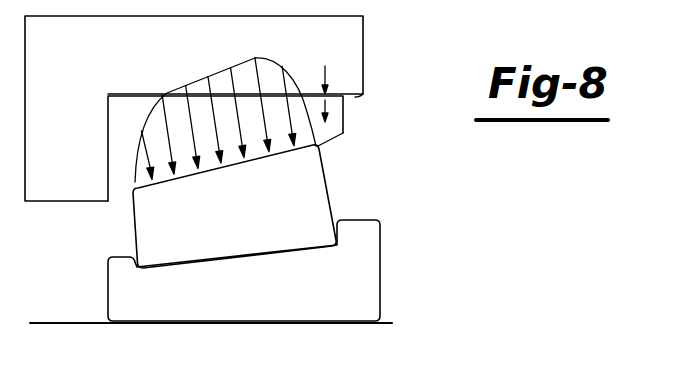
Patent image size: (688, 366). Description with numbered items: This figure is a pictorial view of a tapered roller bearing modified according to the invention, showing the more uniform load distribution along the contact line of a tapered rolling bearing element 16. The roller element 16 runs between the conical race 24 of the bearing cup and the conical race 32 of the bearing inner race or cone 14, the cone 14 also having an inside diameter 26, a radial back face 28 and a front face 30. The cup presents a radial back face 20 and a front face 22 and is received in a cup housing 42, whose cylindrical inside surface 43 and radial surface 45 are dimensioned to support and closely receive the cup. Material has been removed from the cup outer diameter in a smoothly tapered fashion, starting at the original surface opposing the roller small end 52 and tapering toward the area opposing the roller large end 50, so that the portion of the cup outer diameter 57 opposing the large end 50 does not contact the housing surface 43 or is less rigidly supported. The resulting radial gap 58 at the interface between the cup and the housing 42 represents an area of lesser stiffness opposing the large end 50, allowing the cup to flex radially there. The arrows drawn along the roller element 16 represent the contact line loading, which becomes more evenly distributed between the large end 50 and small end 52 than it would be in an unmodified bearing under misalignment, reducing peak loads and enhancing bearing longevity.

The bearing inner race or cone 14 is at (390, 252).
The tapered rolling bearing element 16 is at (124, 222).
The radial back face 20 is at (112, 147).
The front face 22 is at (344, 135).
The race 24 is at (326, 147).
The inside diameter 26 is at (333, 324).
The radial back face 28 is at (107, 290).
The front face 30 is at (383, 304).
The race 32 is at (246, 258).
The cup housing 42 is at (372, 40).
The cylindrical inside surface 43 is at (362, 98).
The radial surface 45 is at (112, 124).
The large end 50 is at (333, 200).
The small end 52 is at (137, 241).
The cup outer diameter 57 is at (321, 148).
The radial gap 58 is at (338, 130).